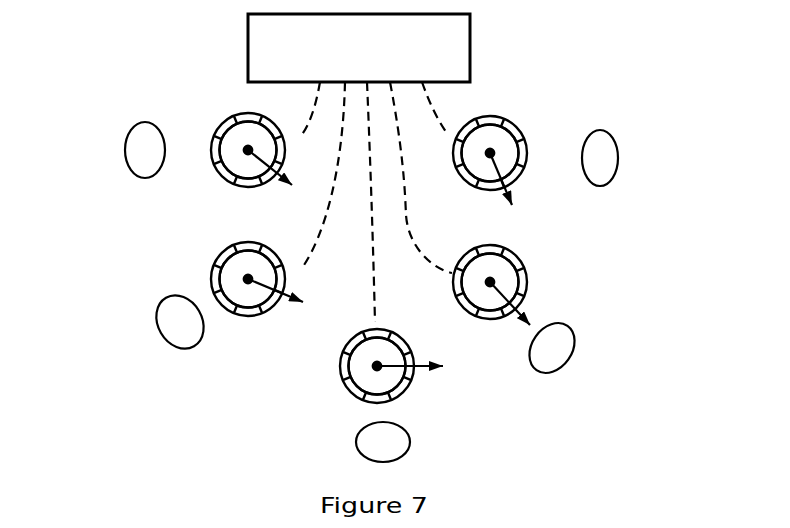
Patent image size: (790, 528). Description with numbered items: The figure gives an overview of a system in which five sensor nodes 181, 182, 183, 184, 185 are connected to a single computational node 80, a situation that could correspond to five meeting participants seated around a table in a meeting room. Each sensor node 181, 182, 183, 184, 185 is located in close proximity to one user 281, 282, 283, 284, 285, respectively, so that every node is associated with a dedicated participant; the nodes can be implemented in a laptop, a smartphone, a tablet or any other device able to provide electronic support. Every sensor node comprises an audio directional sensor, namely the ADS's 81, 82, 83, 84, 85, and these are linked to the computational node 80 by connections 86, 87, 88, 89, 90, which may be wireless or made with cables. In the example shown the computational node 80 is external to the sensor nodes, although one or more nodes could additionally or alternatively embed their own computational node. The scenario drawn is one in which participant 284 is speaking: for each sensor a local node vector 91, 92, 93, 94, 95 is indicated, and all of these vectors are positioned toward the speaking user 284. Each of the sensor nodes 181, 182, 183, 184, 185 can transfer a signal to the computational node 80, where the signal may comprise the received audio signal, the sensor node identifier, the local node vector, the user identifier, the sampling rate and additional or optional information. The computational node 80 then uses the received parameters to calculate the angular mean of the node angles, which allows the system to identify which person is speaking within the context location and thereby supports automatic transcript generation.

The computational node 80 is at (472, 36).
The audio directional sensor 81 is at (240, 113).
The audio directional sensor 82 is at (230, 251).
The audio directional sensor 83 is at (347, 343).
The audio directional sensor 84 is at (513, 252).
The audio directional sensor 85 is at (485, 115).
The connection 86 is at (297, 138).
The connection 87 is at (298, 270).
The connection 88 is at (373, 302).
The connection 89 is at (407, 226).
The connection 90 is at (444, 131).
The local node vector 91 is at (278, 182).
The local node vector 92 is at (262, 291).
The local node vector 93 is at (418, 372).
The local node vector 94 is at (515, 315).
The local node vector 95 is at (512, 183).
The sensor node 181 is at (228, 118).
The sensor node 182 is at (218, 268).
The sensor node 183 is at (340, 383).
The sensor node 184 is at (528, 284).
The sensor node 185 is at (517, 127).
The user 281 is at (130, 128).
The user 282 is at (158, 298).
The user 283 is at (356, 437).
The user 284 is at (575, 333).
The user 285 is at (618, 138).